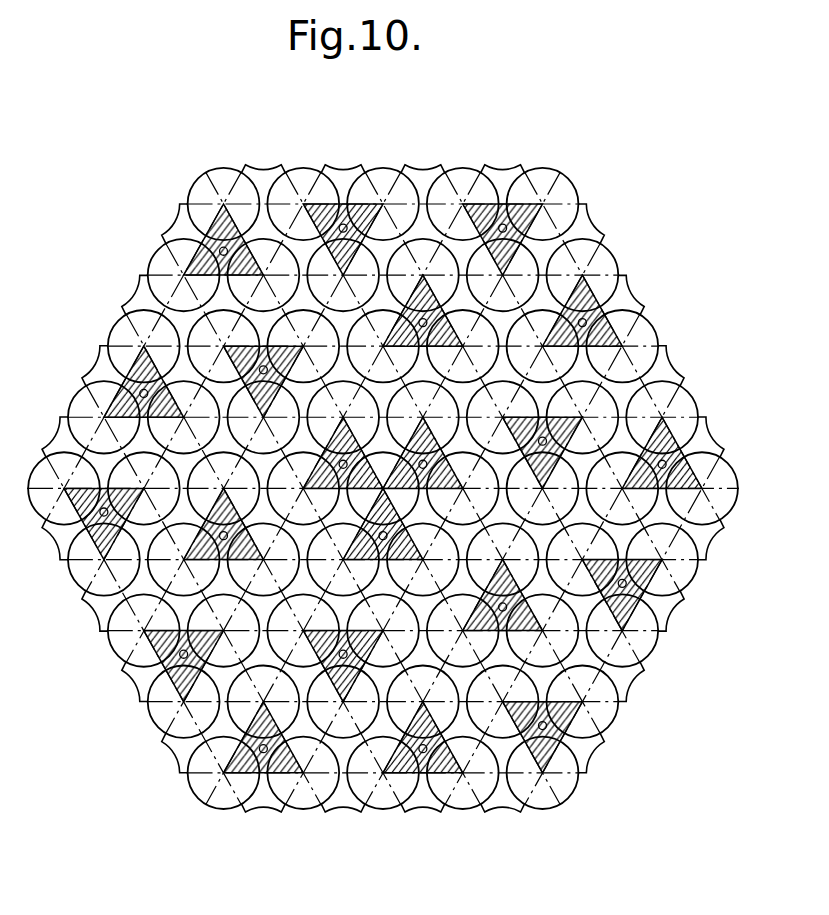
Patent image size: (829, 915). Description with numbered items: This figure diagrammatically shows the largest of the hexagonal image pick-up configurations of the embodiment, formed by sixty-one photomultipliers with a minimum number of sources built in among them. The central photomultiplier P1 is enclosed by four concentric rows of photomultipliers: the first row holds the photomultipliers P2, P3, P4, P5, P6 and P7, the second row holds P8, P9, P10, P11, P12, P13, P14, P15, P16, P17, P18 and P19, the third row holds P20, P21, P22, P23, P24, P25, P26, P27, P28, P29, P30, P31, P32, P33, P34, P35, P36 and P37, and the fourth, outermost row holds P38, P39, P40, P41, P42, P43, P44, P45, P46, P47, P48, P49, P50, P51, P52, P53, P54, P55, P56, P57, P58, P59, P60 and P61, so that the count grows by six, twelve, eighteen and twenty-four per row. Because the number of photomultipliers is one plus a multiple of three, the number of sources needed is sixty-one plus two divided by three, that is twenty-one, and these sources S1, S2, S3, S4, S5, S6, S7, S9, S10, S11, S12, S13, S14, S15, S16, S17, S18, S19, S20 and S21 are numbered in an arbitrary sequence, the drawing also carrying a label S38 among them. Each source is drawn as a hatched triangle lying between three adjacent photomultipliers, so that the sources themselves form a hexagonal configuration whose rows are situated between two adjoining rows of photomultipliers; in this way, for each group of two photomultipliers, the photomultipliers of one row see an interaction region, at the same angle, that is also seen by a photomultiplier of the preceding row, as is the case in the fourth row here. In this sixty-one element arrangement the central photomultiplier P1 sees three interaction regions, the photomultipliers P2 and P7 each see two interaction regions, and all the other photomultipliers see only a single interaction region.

The photomultiplier P1 is at (383, 488).
The photomultiplier P2 is at (423, 417).
The photomultiplier P3 is at (463, 488).
The photomultiplier P4 is at (423, 559).
The photomultiplier P5 is at (343, 559).
The photomultiplier P6 is at (303, 488).
The photomultiplier P7 is at (343, 417).
The photomultiplier P8 is at (383, 346).
The photomultiplier P9 is at (463, 346).
The photomultiplier P10 is at (503, 417).
The photomultiplier P11 is at (543, 488).
The photomultiplier P12 is at (503, 559).
The photomultiplier P13 is at (463, 630).
The photomultiplier P14 is at (383, 630).
The photomultiplier P15 is at (303, 630).
The photomultiplier P16 is at (263, 559).
The photomultiplier P17 is at (224, 488).
The photomultiplier P18 is at (263, 417).
The photomultiplier P19 is at (303, 346).
The photomultiplier P20 is at (423, 275).
The photomultiplier P21 is at (503, 275).
The photomultiplier P22 is at (543, 346).
The photomultiplier P23 is at (582, 417).
The photomultiplier P24 is at (622, 488).
The photomultiplier P25 is at (582, 559).
The photomultiplier P26 is at (543, 630).
The photomultiplier P27 is at (503, 702).
The photomultiplier P28 is at (423, 702).
The photomultiplier P29 is at (343, 702).
The photomultiplier P30 is at (263, 702).
The photomultiplier P31 is at (224, 630).
The photomultiplier P32 is at (184, 559).
The photomultiplier P33 is at (144, 488).
The photomultiplier P34 is at (184, 417).
The photomultiplier P35 is at (224, 346).
The photomultiplier P36 is at (263, 275).
The photomultiplier P37 is at (343, 275).
The photomultiplier P38 is at (383, 204).
The photomultiplier P39 is at (463, 204).
The photomultiplier P40 is at (543, 204).
The photomultiplier P41 is at (582, 275).
The photomultiplier P42 is at (622, 346).
The photomultiplier P43 is at (662, 417).
The photomultiplier P44 is at (702, 488).
The photomultiplier P45 is at (662, 559).
The photomultiplier P46 is at (622, 630).
The photomultiplier P47 is at (582, 702).
The photomultiplier P48 is at (543, 773).
The photomultiplier P49 is at (463, 773).
The photomultiplier P50 is at (383, 773).
The photomultiplier P51 is at (303, 773).
The photomultiplier P52 is at (224, 773).
The photomultiplier P53 is at (184, 702).
The photomultiplier P54 is at (144, 630).
The photomultiplier P55 is at (104, 559).
The photomultiplier P56 is at (64, 488).
The photomultiplier P57 is at (104, 417).
The photomultiplier P58 is at (144, 346).
The photomultiplier P59 is at (184, 275).
The photomultiplier P60 is at (224, 204).
The photomultiplier P61 is at (303, 204).
The source S1 is at (427, 465).
The source S2 is at (381, 538).
The source S3 is at (341, 464).
The source S4 is at (547, 442).
The source S5 is at (507, 608).
The source S6 is at (344, 659).
The source S7 is at (222, 539).
The source S9 is at (427, 323).
The source S10 is at (664, 469).
The source S11 is at (627, 588).
The source S12 is at (547, 728).
The source S13 is at (424, 753).
The source S14 is at (264, 753).
The source S15 is at (182, 657).
The source S16 is at (103, 517).
The source S17 is at (141, 394).
The source S18 is at (221, 252).
The source S19 is at (344, 227).
The source S20 is at (503, 227).
The source S21 is at (587, 323).
The sensor S38 is at (261, 371).